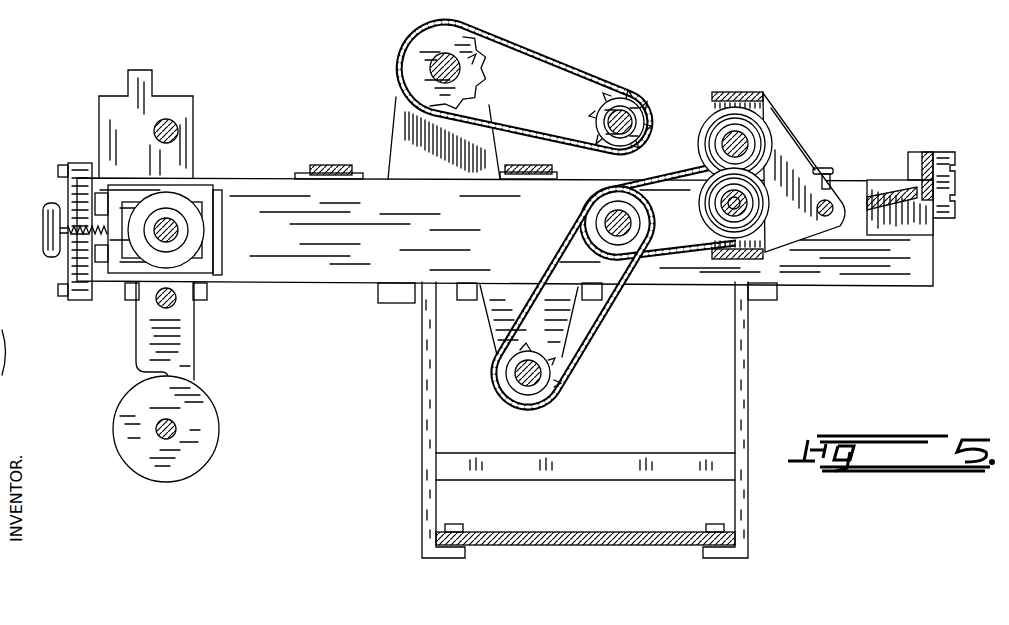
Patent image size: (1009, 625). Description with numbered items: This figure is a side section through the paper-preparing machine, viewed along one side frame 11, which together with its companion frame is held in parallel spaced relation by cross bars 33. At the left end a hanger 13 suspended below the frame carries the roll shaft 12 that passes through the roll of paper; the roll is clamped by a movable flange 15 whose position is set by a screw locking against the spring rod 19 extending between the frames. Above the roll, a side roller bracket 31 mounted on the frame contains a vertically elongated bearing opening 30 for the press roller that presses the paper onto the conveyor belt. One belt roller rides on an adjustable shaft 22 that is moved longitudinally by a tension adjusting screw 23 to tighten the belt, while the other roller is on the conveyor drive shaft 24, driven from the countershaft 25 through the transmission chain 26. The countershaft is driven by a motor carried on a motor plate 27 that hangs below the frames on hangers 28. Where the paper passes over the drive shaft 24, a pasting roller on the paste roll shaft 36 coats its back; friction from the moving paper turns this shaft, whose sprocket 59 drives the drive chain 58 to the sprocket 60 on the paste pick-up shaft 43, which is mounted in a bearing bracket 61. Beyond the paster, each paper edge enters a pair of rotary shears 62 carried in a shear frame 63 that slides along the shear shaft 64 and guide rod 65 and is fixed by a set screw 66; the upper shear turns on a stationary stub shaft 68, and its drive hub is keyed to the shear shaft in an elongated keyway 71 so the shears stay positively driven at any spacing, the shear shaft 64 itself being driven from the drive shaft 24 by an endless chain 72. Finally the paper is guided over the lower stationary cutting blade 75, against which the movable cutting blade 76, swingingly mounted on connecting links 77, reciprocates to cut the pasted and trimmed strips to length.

The side frame 11 is at (378, 270).
The roll shaft 12 is at (177, 430).
The hanger 13 is at (190, 352).
The movable flange 15 is at (212, 402).
The spring rod 19 is at (170, 302).
The adjustable shaft 22 is at (180, 231).
The tension adjusting screw 23 is at (45, 243).
The conveyor drive shaft 24 is at (590, 225).
The countershaft 25 is at (513, 378).
The transmission chain 26 is at (592, 338).
The motor plate 27 is at (553, 532).
The hanger 28 is at (422, 468).
The bearing opening 30 is at (176, 122).
The side roller bracket 31 is at (111, 139).
The cross bar 33 is at (316, 165).
The paste roll shaft 36 is at (630, 124).
The paste pick-up shaft 43 is at (428, 70).
The drive chain 58 is at (534, 46).
The sprocket 59 is at (597, 110).
The sprocket 60 is at (478, 62).
The bearing bracket 61 is at (408, 147).
The rotary shear 62 is at (762, 128).
The shear frame 63 is at (782, 149).
The shear shaft 64 is at (746, 201).
The guide rod 65 is at (836, 200).
The set screw 66 is at (832, 168).
The stationary stub shaft 68 is at (752, 140).
The elongated keyway 71 is at (741, 195).
The endless chain 72 is at (695, 255).
The stationary cutting blade 75 is at (890, 200).
The movable cutting blade 76 is at (925, 175).
The connecting link 77 is at (950, 189).